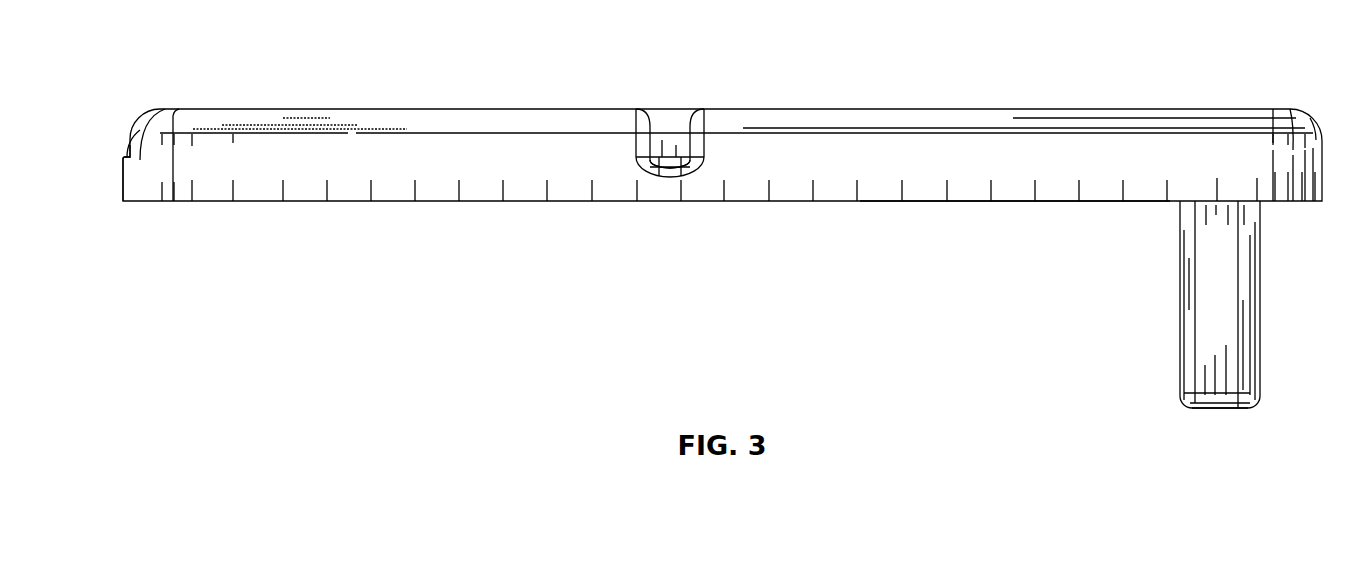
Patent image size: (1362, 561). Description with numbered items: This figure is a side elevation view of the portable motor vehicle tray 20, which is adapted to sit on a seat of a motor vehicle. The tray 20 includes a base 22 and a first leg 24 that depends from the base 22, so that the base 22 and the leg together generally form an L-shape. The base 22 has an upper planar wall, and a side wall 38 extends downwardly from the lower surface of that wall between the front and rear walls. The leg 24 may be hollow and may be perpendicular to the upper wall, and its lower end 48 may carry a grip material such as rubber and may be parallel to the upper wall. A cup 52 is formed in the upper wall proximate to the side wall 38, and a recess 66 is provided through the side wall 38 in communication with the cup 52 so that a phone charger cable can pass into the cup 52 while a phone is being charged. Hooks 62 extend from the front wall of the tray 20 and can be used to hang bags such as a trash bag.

The motor vehicle tray 20 is at (1243, 48).
The base 22 is at (930, 110).
The first leg 24 is at (1220, 287).
The side wall 38 is at (1020, 188).
The lower end 48 is at (1218, 410).
The cup 52 is at (668, 120).
The hooks 62 is at (122, 182).
The recess 66 is at (672, 160).